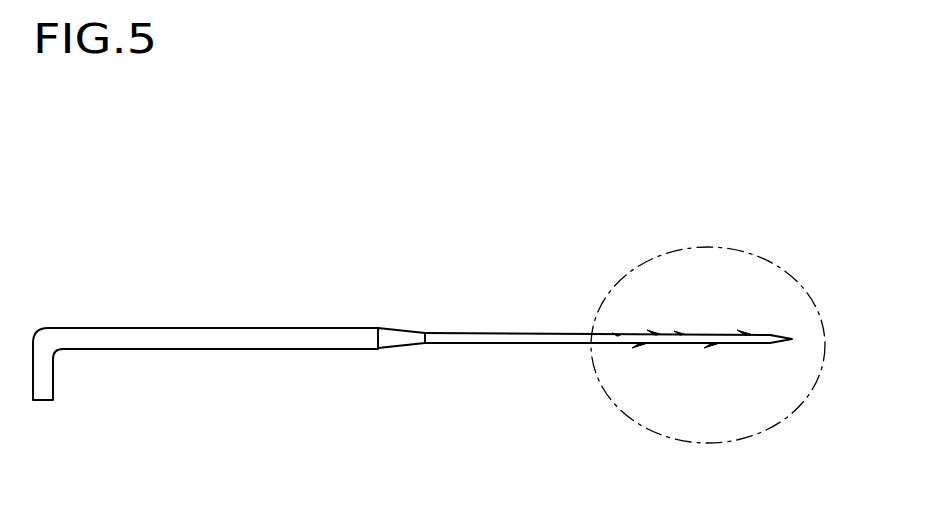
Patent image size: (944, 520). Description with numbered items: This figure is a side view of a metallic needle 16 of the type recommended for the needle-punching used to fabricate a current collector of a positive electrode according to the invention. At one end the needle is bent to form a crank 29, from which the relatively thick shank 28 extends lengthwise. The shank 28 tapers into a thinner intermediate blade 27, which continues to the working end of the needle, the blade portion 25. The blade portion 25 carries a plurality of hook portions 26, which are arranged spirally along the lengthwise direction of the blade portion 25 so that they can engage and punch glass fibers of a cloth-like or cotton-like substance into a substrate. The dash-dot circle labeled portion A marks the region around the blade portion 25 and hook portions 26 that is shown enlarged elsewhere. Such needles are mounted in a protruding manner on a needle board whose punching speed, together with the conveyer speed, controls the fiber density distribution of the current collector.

The metallic needle 16 is at (412, 322).
The blade portion 25 is at (722, 335).
The hook portion 26 is at (708, 346).
The intermediate blade 27 is at (497, 338).
The shank 28 is at (247, 334).
The crank 29 is at (43, 385).
The portion A is at (802, 380).